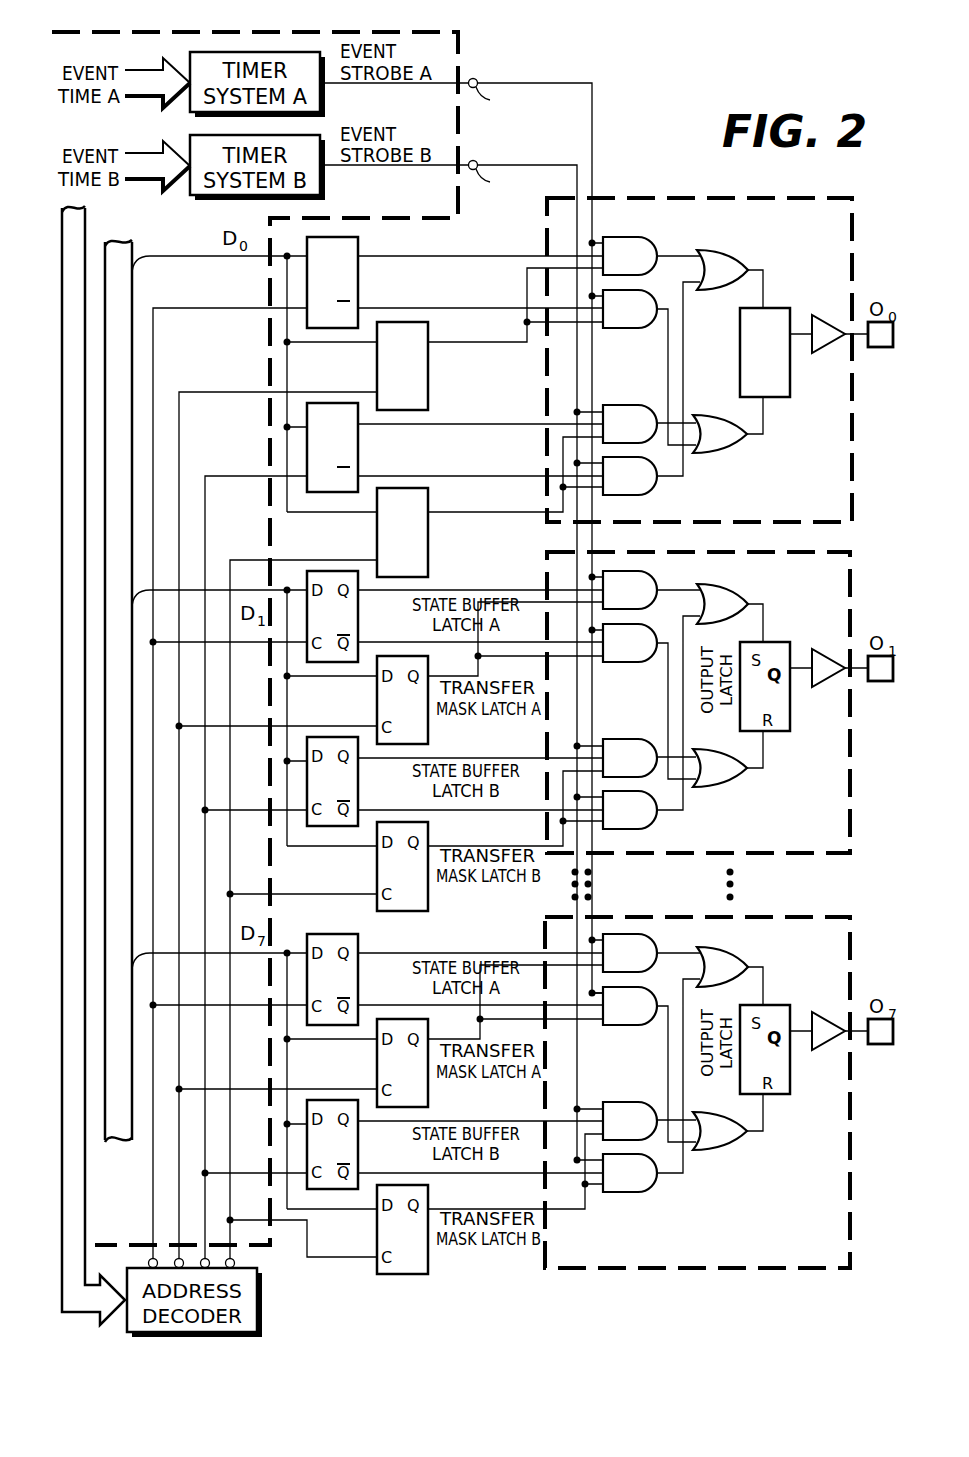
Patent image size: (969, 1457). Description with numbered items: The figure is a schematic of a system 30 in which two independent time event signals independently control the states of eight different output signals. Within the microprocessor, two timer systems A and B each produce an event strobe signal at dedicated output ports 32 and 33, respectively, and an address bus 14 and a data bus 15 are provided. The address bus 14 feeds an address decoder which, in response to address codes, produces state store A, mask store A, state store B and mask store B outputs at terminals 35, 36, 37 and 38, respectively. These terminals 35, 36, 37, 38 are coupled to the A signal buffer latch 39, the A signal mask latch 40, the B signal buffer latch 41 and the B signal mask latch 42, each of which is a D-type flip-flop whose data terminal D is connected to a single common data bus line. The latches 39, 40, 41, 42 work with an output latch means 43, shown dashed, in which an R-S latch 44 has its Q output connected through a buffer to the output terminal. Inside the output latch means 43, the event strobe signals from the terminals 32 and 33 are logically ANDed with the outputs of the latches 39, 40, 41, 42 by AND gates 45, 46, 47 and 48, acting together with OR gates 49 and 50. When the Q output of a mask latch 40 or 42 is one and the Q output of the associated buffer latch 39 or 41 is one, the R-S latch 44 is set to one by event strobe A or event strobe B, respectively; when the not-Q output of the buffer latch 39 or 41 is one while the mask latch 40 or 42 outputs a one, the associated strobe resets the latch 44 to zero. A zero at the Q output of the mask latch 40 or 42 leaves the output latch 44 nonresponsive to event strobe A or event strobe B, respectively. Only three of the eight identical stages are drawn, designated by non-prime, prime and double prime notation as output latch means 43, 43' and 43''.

The address bus 14 is at (86, 224).
The data bus 15 is at (118, 1142).
The system 30 is at (676, 142).
The dedicated output port for event strobe signal A 32 is at (494, 98).
The dedicated output port for event strobe signal B 33 is at (494, 180).
The state store A terminal 35 is at (150, 1256).
The mask store A terminal 36 is at (176, 1256).
The state store B terminal 37 is at (202, 1256).
The mask store B terminal 38 is at (227, 1256).
The A signal buffer latch 39 is at (359, 288).
The A signal mask latch 40 is at (377, 364).
The B signal buffer latch 41 is at (359, 455).
The B signal mask latch 42 is at (377, 540).
The output latch means 43 is at (699, 342).
The output latch means 43' is at (698, 729).
The output latch means 43'' is at (697, 1120).
The R-S latch 44 is at (790, 397).
The AND gate 45 is at (648, 240).
The AND gate 46 is at (624, 329).
The AND gate 47 is at (630, 405).
The AND gate 48 is at (650, 495).
The OR gate 49 is at (733, 254).
The OR gate 50 is at (728, 455).